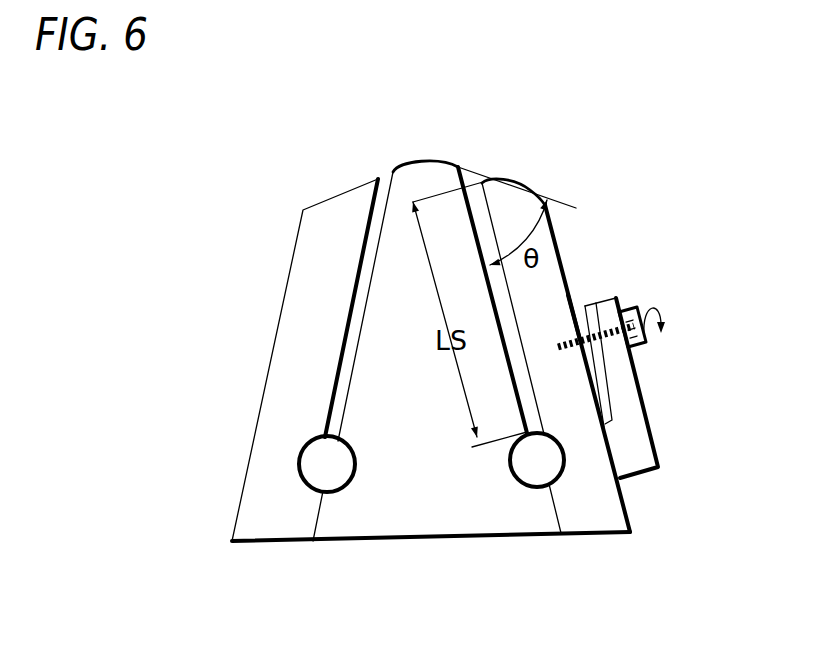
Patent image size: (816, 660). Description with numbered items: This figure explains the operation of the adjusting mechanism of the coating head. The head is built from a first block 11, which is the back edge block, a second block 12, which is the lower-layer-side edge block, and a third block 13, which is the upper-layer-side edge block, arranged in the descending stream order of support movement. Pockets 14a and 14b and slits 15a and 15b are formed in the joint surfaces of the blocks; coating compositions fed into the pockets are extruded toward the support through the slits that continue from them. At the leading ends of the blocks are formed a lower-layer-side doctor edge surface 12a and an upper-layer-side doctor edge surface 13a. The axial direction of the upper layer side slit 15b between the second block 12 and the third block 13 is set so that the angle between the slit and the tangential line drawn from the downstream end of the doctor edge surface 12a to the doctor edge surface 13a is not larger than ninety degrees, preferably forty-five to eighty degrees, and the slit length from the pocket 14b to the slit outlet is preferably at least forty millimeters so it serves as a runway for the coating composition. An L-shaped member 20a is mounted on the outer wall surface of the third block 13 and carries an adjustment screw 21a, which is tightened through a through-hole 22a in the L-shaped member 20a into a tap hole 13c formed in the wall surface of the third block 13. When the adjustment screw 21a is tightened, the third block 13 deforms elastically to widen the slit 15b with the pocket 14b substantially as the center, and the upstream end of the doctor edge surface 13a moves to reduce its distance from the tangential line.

The first block 11 is at (277, 518).
The second block 12 is at (430, 513).
The third block 13 is at (590, 510).
The lower-layer-side doctor edge surface 12a is at (423, 162).
The upper-layer-side doctor edge surface 13a is at (515, 188).
The tap hole 13c is at (567, 320).
The pocket 14a is at (330, 467).
The pocket 14b is at (530, 470).
The slit 15a is at (363, 273).
The upper layer side slit 15b is at (527, 390).
The L-shaped member 20a is at (628, 440).
The adjustment screw 21a is at (628, 307).
The through-hole 22a is at (602, 303).